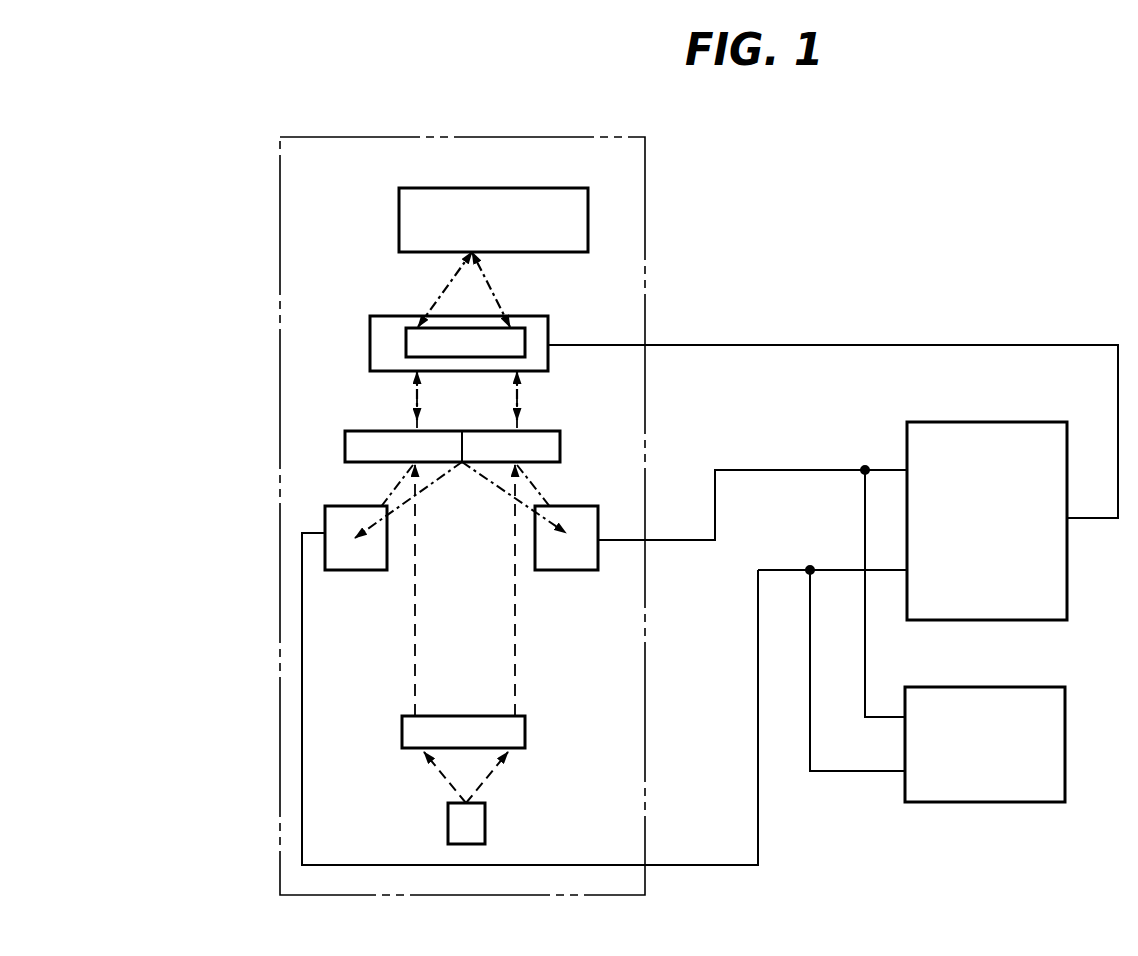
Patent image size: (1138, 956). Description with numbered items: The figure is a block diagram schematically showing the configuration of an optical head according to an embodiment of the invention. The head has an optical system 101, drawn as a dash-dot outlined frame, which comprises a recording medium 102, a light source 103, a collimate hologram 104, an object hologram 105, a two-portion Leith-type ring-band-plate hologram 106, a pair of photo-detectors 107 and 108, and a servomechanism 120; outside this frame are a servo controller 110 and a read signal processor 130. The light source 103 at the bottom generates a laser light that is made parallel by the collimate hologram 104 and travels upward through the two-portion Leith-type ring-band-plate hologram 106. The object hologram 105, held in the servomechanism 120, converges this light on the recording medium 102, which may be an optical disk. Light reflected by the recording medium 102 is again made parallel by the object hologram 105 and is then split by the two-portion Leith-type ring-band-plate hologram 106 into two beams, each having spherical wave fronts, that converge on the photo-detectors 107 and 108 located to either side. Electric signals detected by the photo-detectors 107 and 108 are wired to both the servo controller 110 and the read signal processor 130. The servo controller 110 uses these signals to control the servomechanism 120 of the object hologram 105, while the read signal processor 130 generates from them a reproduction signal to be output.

The optical system 101 is at (638, 157).
The recording medium 102 is at (555, 193).
The light source 103 is at (455, 827).
The collimate hologram 104 is at (410, 730).
The object hologram 105 is at (520, 337).
The two-portion Leith-type ring-band-plate hologram 106 is at (556, 440).
The photo-detector 107 is at (580, 563).
The photo-detector 108 is at (323, 513).
The servo controller 110 is at (1055, 565).
The servomechanism 120 is at (380, 333).
The read signal processor 130 is at (1058, 735).